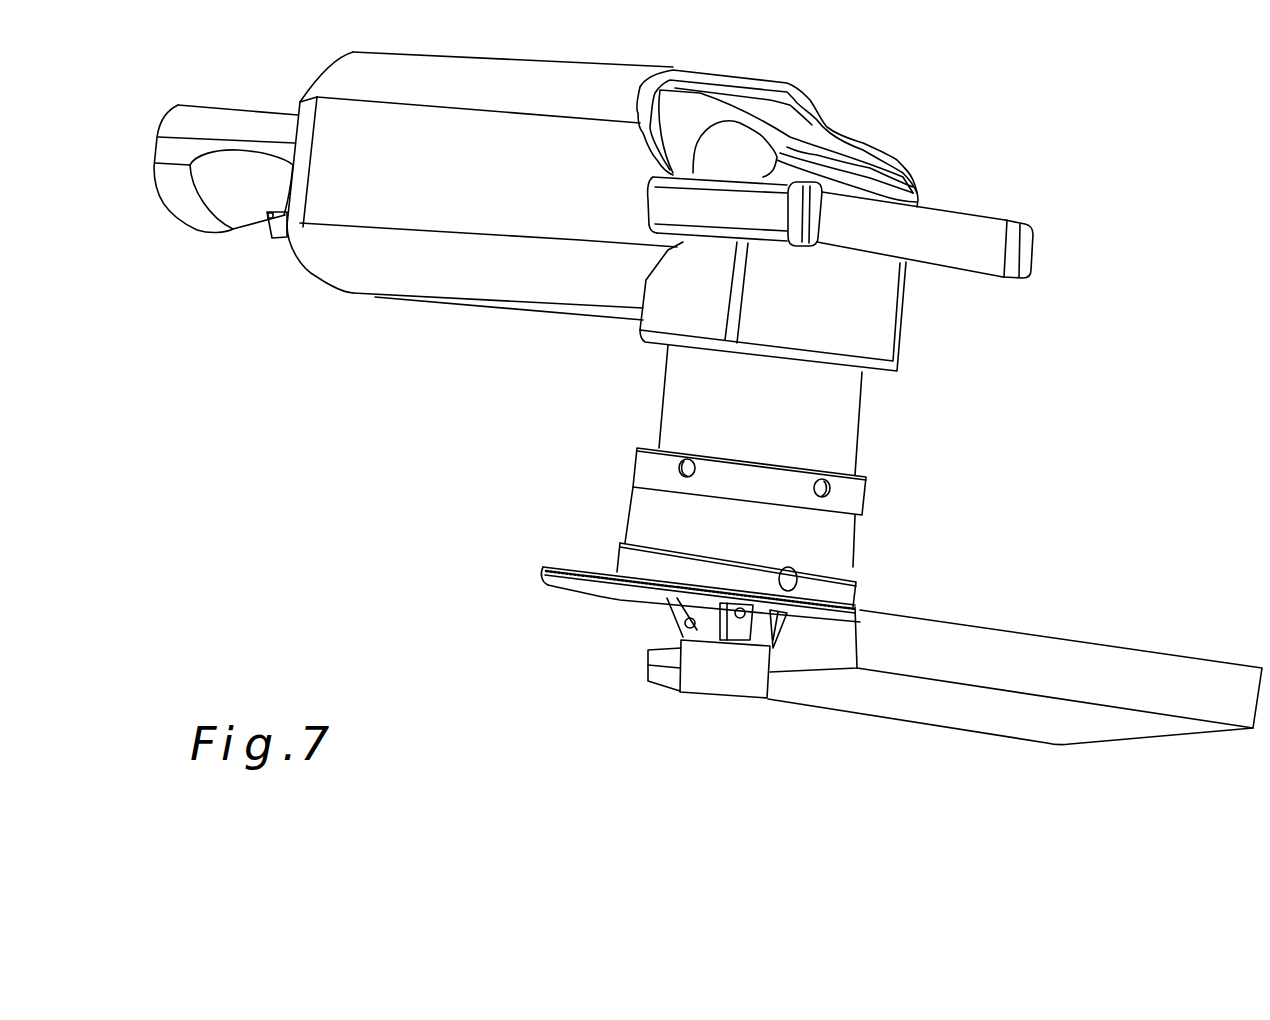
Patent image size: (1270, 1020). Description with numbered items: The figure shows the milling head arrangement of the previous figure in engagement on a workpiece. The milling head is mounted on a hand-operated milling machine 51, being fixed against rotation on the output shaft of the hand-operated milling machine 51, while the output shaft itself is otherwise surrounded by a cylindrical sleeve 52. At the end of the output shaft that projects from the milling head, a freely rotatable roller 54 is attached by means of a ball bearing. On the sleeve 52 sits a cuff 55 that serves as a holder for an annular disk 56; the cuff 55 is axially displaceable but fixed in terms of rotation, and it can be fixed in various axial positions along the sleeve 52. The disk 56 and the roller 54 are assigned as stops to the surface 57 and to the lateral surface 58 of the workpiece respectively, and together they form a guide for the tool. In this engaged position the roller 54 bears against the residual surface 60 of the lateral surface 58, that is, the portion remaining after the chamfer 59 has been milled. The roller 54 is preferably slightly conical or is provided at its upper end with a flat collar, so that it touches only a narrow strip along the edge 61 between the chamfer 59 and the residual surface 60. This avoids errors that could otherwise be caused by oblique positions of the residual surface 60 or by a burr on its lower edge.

The hand-operated milling machine 51 is at (920, 122).
The cylindrical sleeve 52 is at (840, 425).
The roller 54 is at (733, 682).
The cuff 55 is at (832, 538).
The annular disk 56 is at (593, 590).
The surface 57 is at (1029, 633).
The lateral surface 58 is at (822, 658).
The chamfer 59 is at (677, 628).
The residual surface 60 is at (660, 672).
The edge 61 is at (647, 661).